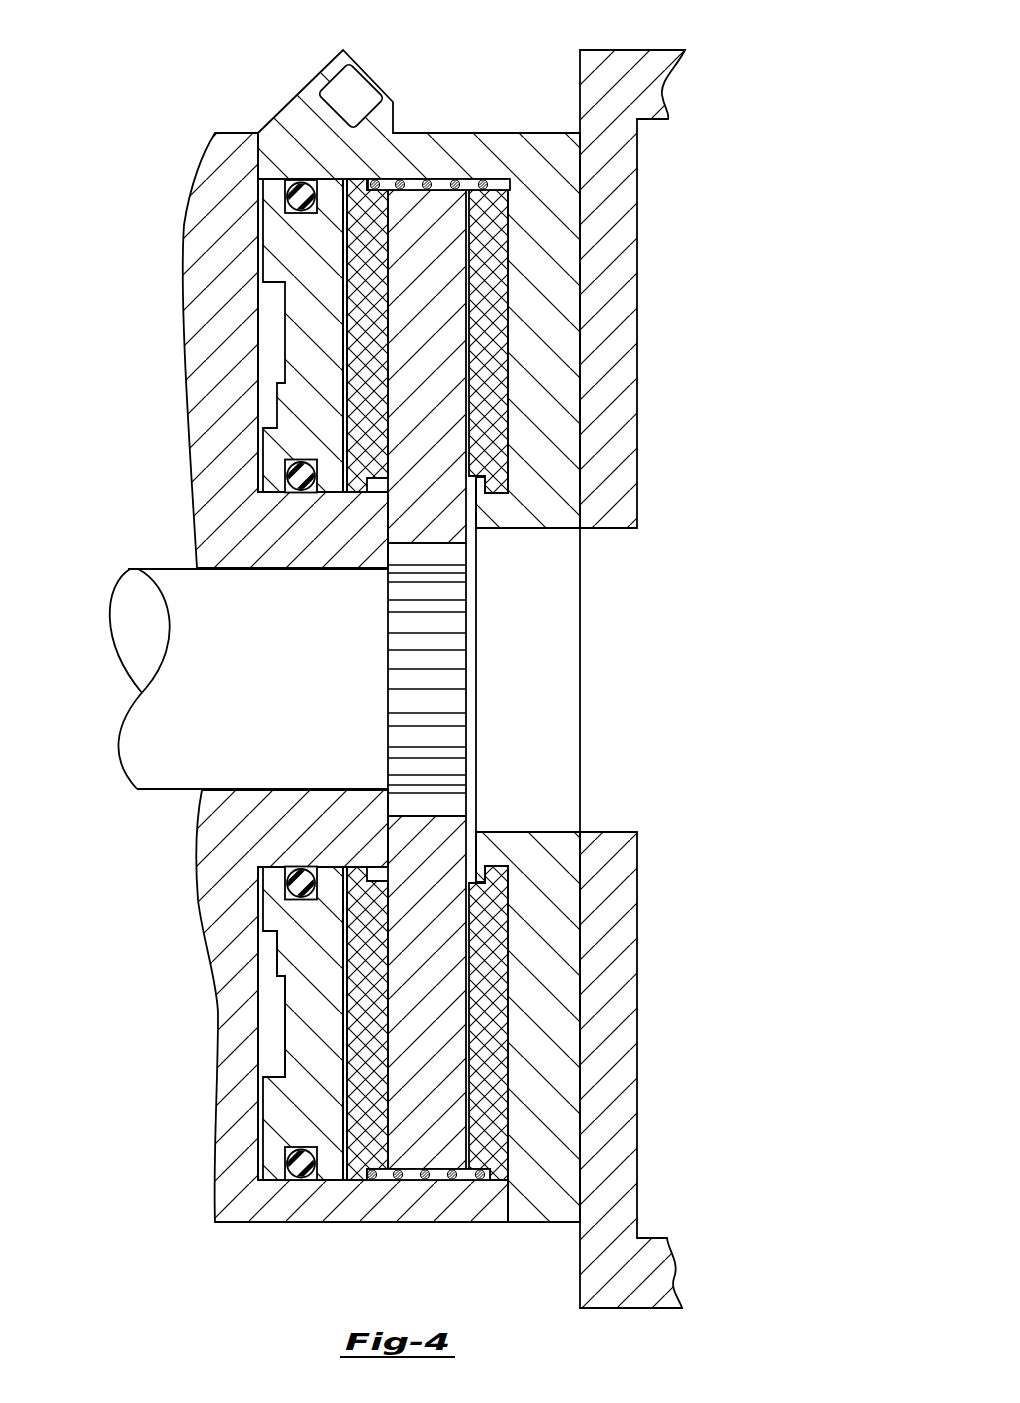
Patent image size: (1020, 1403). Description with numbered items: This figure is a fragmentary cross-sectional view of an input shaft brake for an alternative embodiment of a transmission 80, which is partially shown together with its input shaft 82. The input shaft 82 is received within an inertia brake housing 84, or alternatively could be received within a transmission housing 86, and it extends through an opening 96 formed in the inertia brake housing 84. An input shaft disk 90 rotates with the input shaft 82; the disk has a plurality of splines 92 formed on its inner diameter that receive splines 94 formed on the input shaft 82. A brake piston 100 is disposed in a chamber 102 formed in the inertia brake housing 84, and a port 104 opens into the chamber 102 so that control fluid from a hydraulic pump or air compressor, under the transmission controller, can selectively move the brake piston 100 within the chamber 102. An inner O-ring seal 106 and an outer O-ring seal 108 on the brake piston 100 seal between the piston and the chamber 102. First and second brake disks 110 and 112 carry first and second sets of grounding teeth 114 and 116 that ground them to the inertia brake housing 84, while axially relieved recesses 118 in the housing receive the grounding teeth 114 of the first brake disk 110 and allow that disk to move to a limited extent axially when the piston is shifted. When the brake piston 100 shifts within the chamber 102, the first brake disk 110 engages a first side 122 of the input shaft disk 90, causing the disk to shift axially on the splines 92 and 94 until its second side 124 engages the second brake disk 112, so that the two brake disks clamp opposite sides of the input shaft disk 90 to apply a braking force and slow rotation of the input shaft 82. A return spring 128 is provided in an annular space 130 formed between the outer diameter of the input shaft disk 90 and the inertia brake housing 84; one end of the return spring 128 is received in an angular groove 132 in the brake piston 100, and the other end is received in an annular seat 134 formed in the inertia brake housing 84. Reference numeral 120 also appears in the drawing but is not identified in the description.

The transmission 80 is at (372, 654).
The input shaft 82 is at (152, 770).
The inertia brake housing 84 is at (214, 1166).
The transmission housing 86 is at (612, 1120).
The input shaft disk 90 is at (438, 840).
The splines 92 is at (469, 679).
The splines 94 is at (452, 682).
The opening 96 is at (252, 570).
The brake piston 100 is at (262, 1023).
The chamber 102 is at (272, 1058).
The port 104 is at (330, 138).
The inner O-ring seal 106 is at (295, 465).
The outer O-ring seal 108 is at (295, 203).
The first brake disk 110 is at (307, 273).
The second brake disk 112 is at (579, 685).
The first set of grounding teeth 114 is at (358, 184).
The second set of grounding teeth 116 is at (530, 124).
The axially relieved recesses 118 is at (442, 1225).
The retainer end 120 is at (490, 1180).
The first side 122 is at (383, 978).
The second side 124 is at (497, 932).
The return spring 128 is at (440, 178).
The annular space 130 is at (466, 186).
The angular groove 132 is at (380, 228).
The annular seat 134 is at (483, 184).